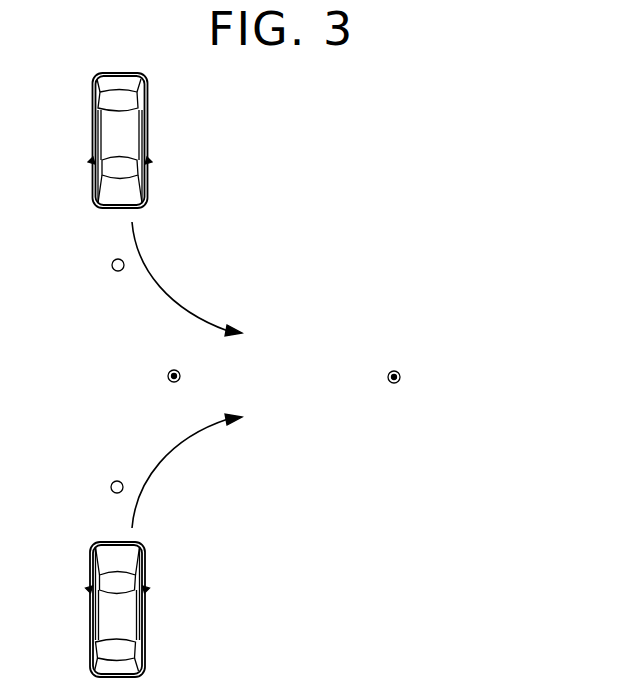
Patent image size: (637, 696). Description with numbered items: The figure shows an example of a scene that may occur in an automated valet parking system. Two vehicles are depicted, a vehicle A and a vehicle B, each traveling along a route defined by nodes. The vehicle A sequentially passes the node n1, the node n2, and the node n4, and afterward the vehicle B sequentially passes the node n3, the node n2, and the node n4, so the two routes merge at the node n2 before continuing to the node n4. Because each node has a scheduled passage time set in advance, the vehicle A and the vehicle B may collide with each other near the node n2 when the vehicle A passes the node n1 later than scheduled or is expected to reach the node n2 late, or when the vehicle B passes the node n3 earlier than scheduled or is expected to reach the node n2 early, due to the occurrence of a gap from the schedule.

The vehicle A is at (93, 124).
The vehicle B is at (91, 624).
The node n1 is at (112, 265).
The node n2 is at (168, 376).
The node n3 is at (111, 487).
The node n4 is at (400, 377).